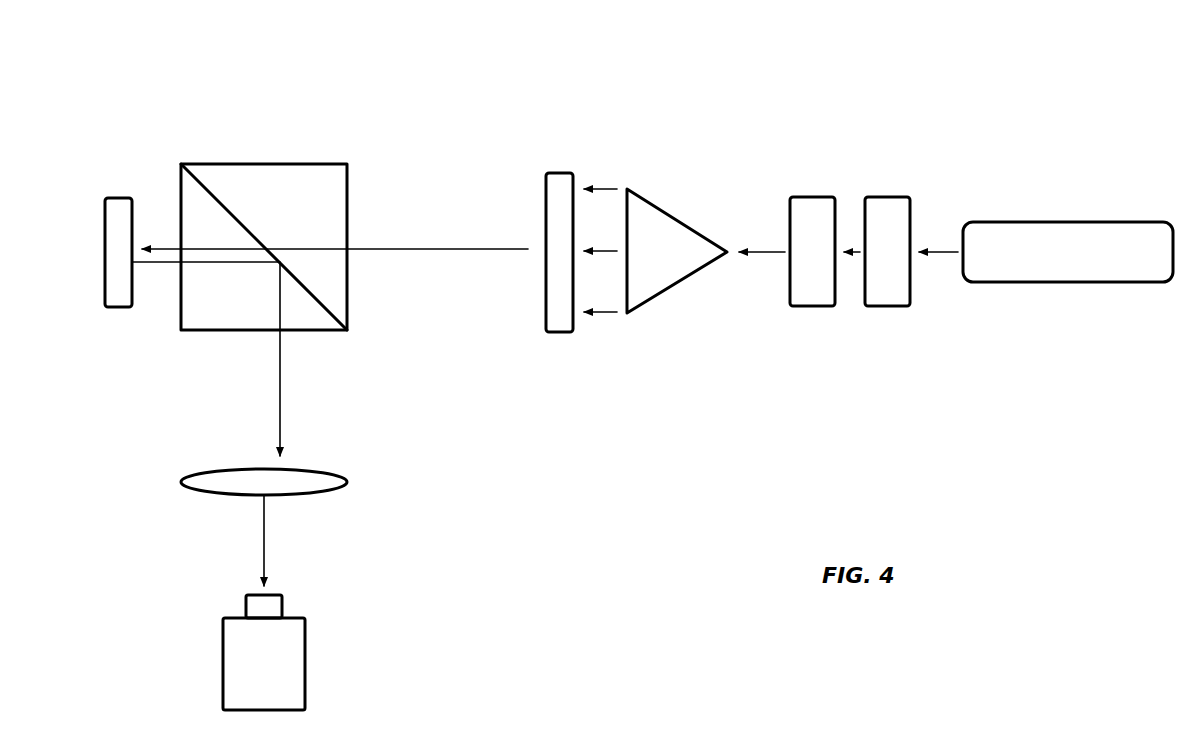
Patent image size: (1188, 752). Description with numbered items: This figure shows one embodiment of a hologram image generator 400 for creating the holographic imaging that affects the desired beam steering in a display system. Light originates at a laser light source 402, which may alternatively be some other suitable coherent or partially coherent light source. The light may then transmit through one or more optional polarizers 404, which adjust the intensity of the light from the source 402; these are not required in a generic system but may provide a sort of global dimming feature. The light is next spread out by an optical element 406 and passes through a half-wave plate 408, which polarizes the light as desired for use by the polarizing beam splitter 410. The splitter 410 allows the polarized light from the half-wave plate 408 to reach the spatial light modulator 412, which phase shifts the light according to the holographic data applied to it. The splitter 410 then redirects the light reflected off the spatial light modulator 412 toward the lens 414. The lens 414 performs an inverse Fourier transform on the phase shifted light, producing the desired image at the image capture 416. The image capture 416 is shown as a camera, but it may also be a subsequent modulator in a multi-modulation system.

The hologram image generator 400 is at (135, 64).
The laser light source 402 is at (1075, 222).
The polarizers 404 is at (910, 184).
The optical element 406 is at (663, 210).
The half-wave plate 408 is at (556, 172).
The polarizing beam splitter 410 is at (262, 163).
The spatial light modulator 412 is at (117, 197).
The lens 414 is at (225, 468).
The image capture 416 is at (255, 595).